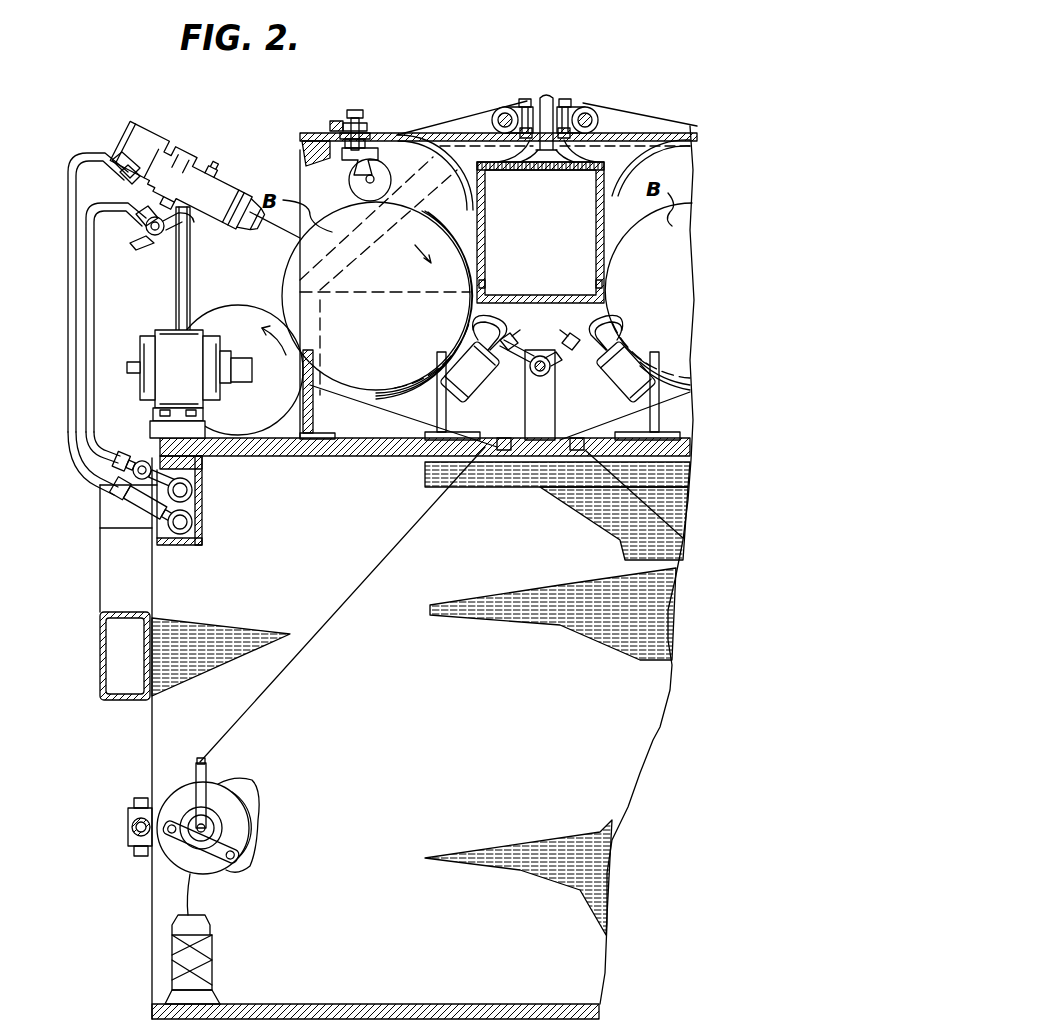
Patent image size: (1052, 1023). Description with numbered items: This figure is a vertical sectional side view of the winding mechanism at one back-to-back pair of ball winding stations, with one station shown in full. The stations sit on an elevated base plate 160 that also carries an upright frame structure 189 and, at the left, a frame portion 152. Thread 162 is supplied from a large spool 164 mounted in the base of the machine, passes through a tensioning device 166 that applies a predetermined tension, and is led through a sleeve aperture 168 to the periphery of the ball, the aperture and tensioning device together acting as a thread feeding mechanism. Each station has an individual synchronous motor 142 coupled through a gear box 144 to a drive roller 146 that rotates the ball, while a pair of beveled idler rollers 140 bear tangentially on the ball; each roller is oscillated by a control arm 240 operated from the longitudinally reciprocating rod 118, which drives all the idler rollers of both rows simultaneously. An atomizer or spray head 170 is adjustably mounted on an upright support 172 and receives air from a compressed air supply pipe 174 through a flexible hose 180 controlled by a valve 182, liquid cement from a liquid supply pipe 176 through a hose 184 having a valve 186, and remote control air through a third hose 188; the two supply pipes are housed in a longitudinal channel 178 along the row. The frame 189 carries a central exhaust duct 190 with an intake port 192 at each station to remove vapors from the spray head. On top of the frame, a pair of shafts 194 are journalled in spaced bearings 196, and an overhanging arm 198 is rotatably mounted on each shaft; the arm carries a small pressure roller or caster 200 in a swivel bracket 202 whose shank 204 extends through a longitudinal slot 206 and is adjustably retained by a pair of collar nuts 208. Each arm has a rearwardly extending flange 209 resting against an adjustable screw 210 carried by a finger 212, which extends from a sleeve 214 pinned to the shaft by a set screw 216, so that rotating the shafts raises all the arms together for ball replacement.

The reciprocating rod 118 is at (541, 356).
The beveled roller 140 is at (592, 300).
The synchronous motor 142 is at (160, 332).
The gear box 144 is at (252, 370).
The drive roller 146 is at (236, 318).
The frame 152 is at (105, 503).
The base plate 160 is at (268, 456).
The thread 162 is at (628, 498).
The spool 164 is at (212, 958).
The tensioning device 166 is at (255, 792).
The sleeve aperture 168 is at (575, 452).
The spray head 170 is at (228, 170).
The upright support 172 is at (176, 267).
The compressed air supply pipe 174 is at (202, 490).
The liquid supply pipe 176 is at (202, 520).
The longitudinal channel 178 is at (202, 543).
The flexible hose 180 is at (68, 362).
The valve 182 is at (146, 460).
The hose 184 is at (88, 455).
The valve 186 is at (148, 236).
The third hose 188 is at (80, 191).
The upright frame structure 189 is at (292, 262).
The central exhaust duct 190 is at (540, 232).
The intake port 192 is at (486, 290).
The shaft 194 is at (498, 112).
The bearing 196 is at (503, 106).
The overhanging arm 198 is at (398, 130).
The pressure roller 200 is at (349, 186).
The swivel bracket 202 is at (378, 165).
The shank 204 is at (350, 112).
The longitudinal slot 206 is at (342, 118).
The collar nut 208 is at (366, 112).
The rearwardly extending flange 209 is at (568, 160).
The adjustable screw 210 is at (546, 118).
The finger 212 is at (526, 100).
The sleeve 214 is at (524, 98).
The set screw 216 is at (497, 120).
The control arm 240 is at (542, 353).